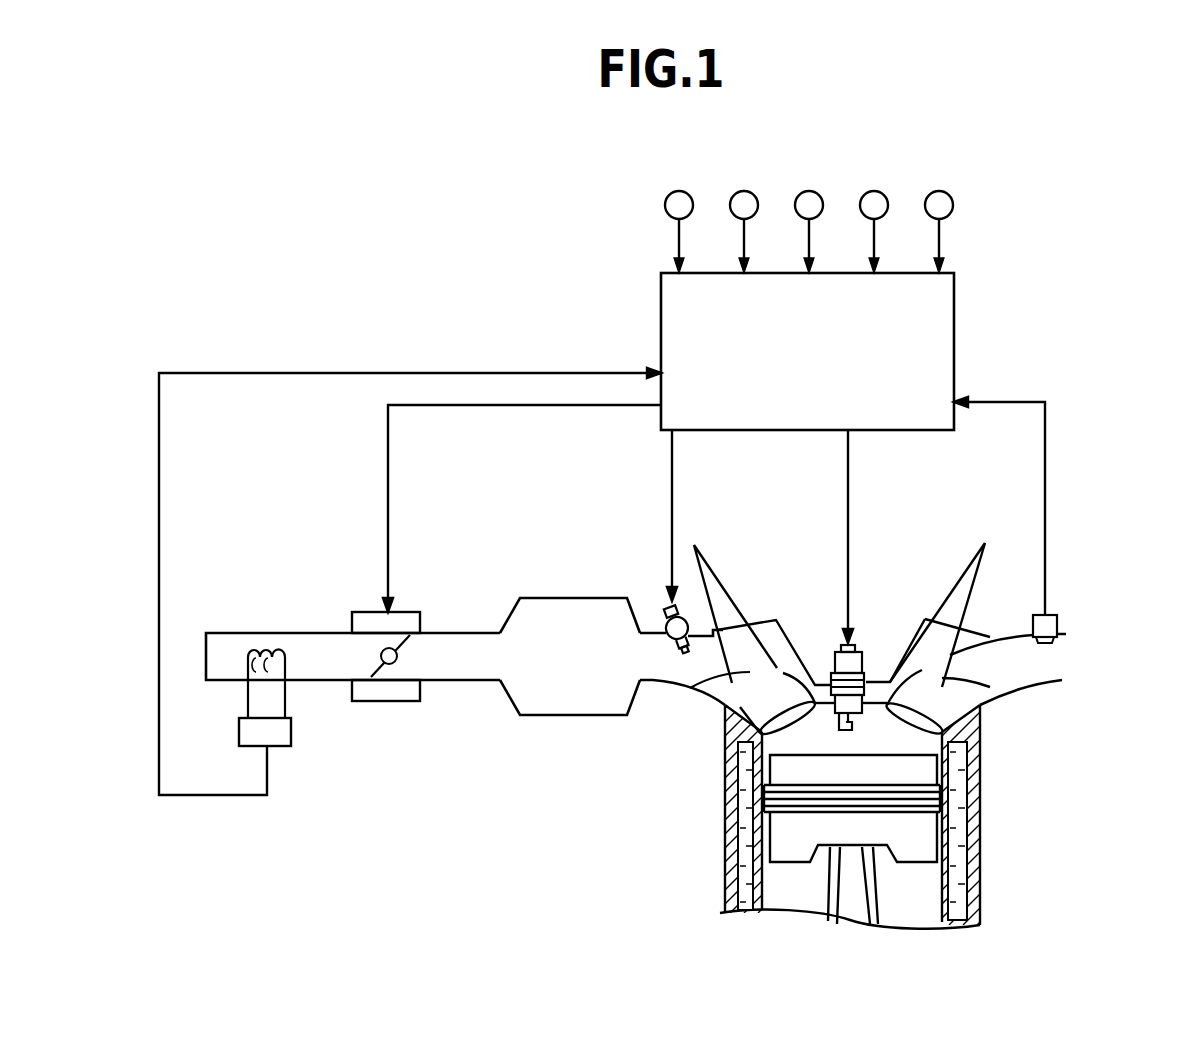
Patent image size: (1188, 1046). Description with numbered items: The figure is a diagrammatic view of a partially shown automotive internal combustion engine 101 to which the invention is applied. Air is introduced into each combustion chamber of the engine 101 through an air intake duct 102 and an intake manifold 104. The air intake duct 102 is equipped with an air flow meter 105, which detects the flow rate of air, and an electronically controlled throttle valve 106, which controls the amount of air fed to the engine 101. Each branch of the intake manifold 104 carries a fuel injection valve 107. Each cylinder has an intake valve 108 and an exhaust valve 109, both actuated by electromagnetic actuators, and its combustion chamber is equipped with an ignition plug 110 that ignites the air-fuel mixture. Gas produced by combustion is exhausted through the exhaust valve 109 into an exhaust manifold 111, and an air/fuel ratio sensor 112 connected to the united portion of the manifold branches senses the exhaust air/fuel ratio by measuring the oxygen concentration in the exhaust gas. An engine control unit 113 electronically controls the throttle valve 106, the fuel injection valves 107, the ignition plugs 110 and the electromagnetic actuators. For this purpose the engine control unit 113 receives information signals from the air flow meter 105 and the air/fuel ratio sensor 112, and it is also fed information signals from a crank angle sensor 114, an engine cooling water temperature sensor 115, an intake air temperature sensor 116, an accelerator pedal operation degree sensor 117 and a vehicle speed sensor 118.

The internal combustion engine 101 is at (695, 850).
The air intake duct 102 is at (465, 633).
The intake manifold 104 is at (675, 683).
The air flow meter 105 is at (285, 746).
The electronically controlled throttle valve 106 is at (400, 695).
The fuel injection valve 107 is at (665, 620).
The intake valve 108 is at (708, 690).
The exhaust valve 109 is at (942, 678).
The ignition plug 110 is at (863, 650).
The exhaust manifold 111 is at (1058, 682).
The air/fuel ratio sensor 112 is at (1058, 620).
The engine control unit 113 is at (777, 431).
The crank angle sensor 114 is at (680, 191).
The engine cooling water temperature sensor 115 is at (745, 191).
The intake air temperature sensor 116 is at (810, 191).
The accelerator pedal operation degree sensor 117 is at (875, 191).
The vehicle speed sensor 118 is at (940, 191).